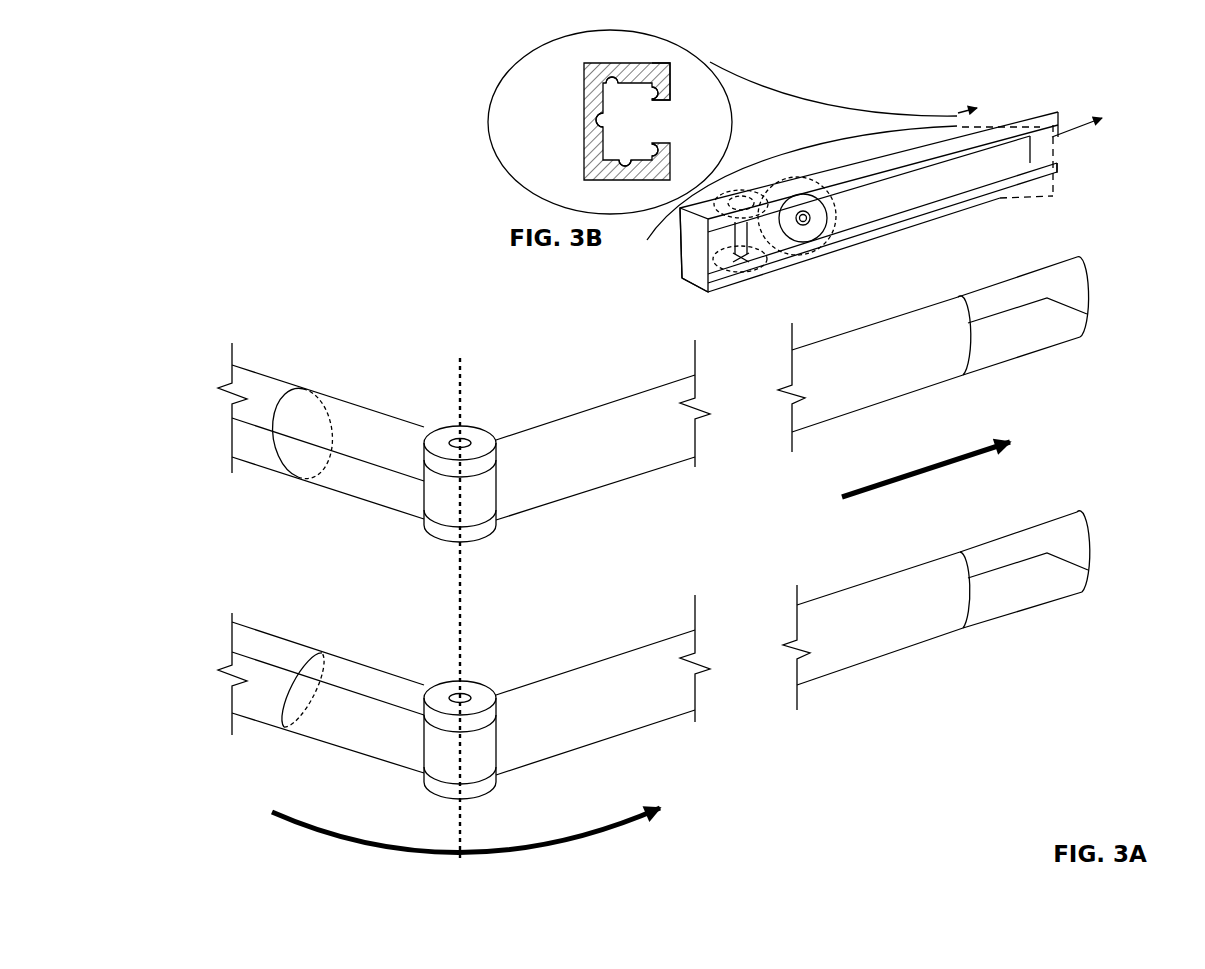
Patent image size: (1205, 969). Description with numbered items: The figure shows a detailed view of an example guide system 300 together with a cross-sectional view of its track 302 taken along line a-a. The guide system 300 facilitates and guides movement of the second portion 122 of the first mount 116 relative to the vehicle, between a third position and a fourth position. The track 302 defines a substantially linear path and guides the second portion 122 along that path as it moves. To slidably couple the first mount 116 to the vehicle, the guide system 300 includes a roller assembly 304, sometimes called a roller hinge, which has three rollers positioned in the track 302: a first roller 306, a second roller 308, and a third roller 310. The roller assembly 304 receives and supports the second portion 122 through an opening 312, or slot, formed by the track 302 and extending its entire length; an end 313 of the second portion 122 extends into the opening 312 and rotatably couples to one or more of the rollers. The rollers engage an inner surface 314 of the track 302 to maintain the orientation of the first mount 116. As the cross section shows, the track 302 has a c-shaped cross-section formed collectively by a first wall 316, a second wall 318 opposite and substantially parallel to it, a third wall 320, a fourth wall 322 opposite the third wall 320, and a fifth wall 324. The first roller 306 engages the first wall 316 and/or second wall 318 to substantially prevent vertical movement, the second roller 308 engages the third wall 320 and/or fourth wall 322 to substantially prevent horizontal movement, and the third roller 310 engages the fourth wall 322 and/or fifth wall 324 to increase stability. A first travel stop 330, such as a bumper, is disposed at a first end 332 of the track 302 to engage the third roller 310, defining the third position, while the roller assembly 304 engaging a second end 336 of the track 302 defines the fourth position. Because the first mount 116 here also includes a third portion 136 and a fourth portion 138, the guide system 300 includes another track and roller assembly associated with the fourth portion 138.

In FIG. 3A, the first mount 116 is at (308, 256).
In FIG. 3A, the second portion 122 is at (575, 498).
In FIG. 3A, the third portion 136 is at (338, 750).
In FIG. 3A, the fourth portion 138 is at (590, 752).
In FIG. 3A, the guide system 300 is at (1090, 72).
In FIG. 3A, the track 302 is at (1002, 112).
In FIG. 3B, the track 302 is at (583, 98).
In FIG. 3A, the roller assembly 304 is at (752, 296).
In FIG. 3A, the first roller 306 is at (828, 213).
In FIG. 3A, the second roller 308 is at (755, 197).
In FIG. 3A, the third roller 310 is at (765, 263).
In FIG. 3A, the opening 312 is at (1065, 142).
In FIG. 3B, the opening 312 is at (676, 100).
In FIG. 3A, the end 313 is at (1092, 286).
In FIG. 3A, the inner surface 314 is at (923, 187).
In FIG. 3B, the first wall 316 is at (612, 82).
In FIG. 3B, the second wall 318 is at (622, 162).
In FIG. 3B, the third wall 320 is at (596, 124).
In FIG. 3B, the fourth wall 322 is at (646, 95).
In FIG. 3B, the fifth wall 324 is at (646, 148).
In FIG. 3A, the first travel stop 330 is at (688, 256).
In FIG. 3A, the first end 332 is at (692, 252).
In FIG. 3A, the second end 336 is at (1060, 164).